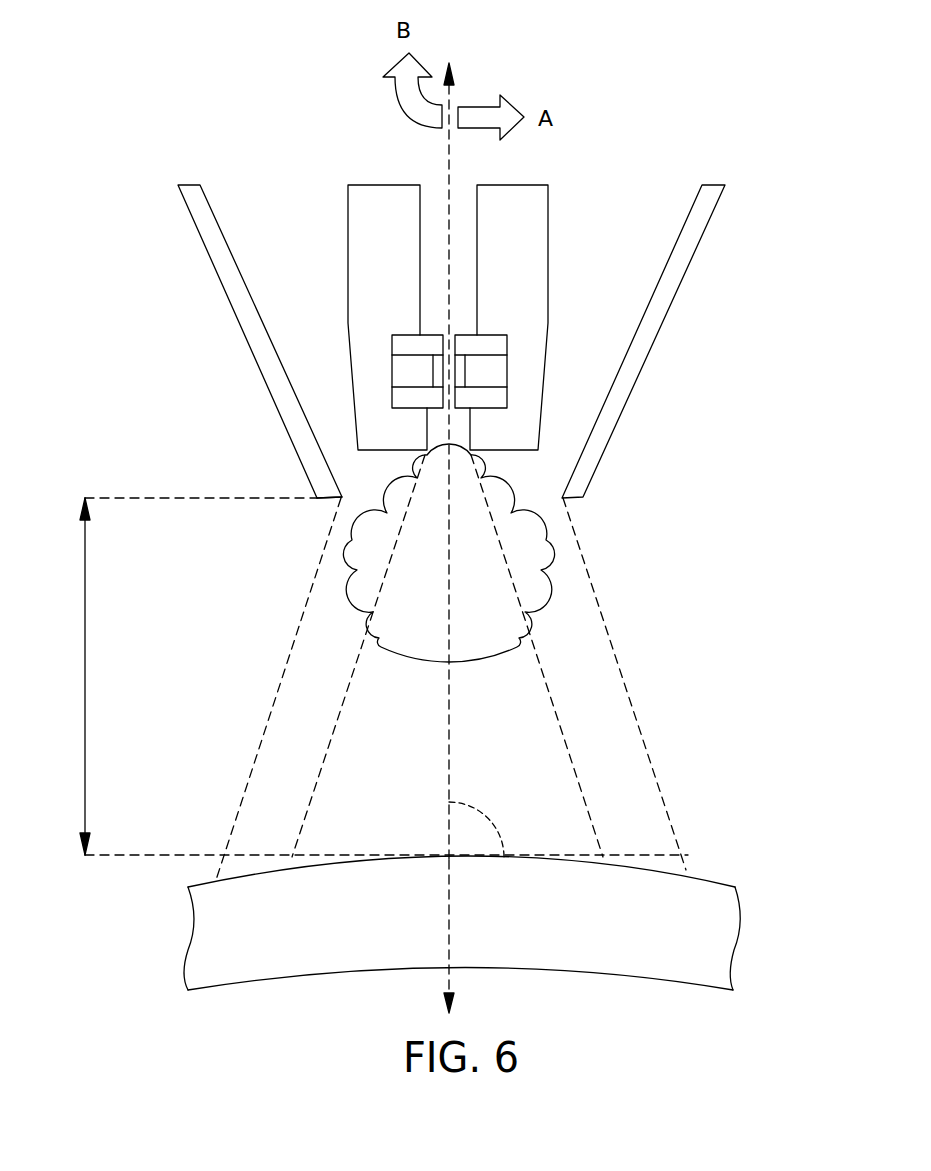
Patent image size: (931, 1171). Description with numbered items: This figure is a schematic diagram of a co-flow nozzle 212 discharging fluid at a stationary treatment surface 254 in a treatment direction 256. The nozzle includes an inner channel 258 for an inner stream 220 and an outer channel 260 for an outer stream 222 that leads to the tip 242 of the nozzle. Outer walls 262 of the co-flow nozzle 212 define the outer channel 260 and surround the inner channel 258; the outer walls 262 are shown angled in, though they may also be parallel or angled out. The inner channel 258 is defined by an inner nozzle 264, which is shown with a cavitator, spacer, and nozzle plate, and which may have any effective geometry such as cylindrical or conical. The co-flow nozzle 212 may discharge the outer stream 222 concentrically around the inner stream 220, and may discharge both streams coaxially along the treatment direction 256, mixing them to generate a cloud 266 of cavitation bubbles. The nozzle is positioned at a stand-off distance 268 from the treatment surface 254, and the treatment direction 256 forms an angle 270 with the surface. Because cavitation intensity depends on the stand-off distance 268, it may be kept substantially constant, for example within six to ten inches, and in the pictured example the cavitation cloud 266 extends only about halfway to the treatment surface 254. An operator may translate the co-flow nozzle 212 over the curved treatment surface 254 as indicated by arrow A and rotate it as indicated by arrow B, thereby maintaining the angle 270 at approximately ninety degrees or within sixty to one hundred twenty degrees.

The co-flow nozzle 212 is at (760, 296).
The inner stream 220 is at (560, 721).
The outer stream 222 is at (617, 663).
The tip 242 is at (300, 515).
The treatment surface 254 is at (720, 902).
The treatment direction 256 is at (452, 938).
The inner channel 258 is at (434, 200).
The outer channel 260 is at (316, 228).
The outer walls 262 is at (202, 208).
The inner nozzle 264 is at (548, 198).
The cloud of cavitation bubbles 266 is at (551, 555).
The stand-off distance 268 is at (84, 680).
The angle 270 is at (476, 806).